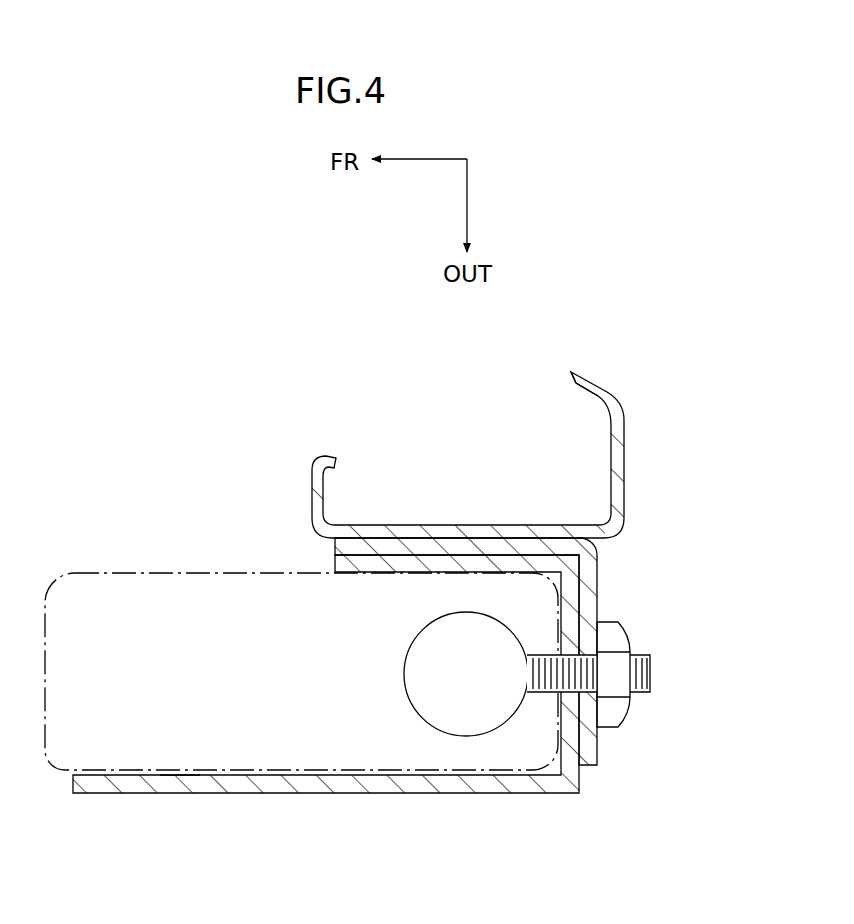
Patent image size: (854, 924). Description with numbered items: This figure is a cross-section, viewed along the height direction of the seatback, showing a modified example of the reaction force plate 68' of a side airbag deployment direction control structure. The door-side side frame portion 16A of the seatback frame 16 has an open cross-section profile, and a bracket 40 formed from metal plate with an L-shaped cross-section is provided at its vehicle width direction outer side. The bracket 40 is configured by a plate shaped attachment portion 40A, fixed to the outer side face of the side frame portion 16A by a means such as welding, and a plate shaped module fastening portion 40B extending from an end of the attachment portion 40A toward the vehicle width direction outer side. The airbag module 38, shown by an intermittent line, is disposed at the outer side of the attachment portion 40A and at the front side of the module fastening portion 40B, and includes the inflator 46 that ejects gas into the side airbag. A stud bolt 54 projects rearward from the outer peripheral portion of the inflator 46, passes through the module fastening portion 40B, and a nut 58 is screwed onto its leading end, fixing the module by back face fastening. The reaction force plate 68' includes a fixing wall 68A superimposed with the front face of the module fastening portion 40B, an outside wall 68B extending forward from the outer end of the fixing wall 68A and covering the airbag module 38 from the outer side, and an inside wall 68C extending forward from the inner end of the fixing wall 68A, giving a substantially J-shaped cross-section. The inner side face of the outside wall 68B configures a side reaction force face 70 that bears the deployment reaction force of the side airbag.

The seatback frame 16 is at (627, 333).
The side frame portion 16A is at (586, 365).
The airbag module 38 is at (135, 568).
The bracket 40 is at (516, 525).
The attachment portion 40A is at (418, 545).
The module fastening portion 40B is at (595, 748).
The inflator 46 is at (405, 672).
The stud bolt 54 is at (652, 672).
The nut 58 is at (628, 640).
The fixing wall 68A is at (570, 590).
The outside wall 68B is at (310, 795).
The inside wall 68C is at (468, 560).
The reaction force plate 68' is at (502, 836).
The side reaction force face 70 is at (173, 776).